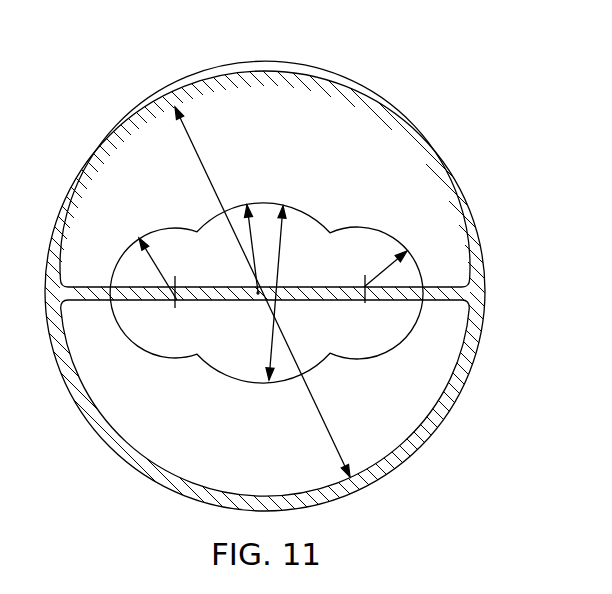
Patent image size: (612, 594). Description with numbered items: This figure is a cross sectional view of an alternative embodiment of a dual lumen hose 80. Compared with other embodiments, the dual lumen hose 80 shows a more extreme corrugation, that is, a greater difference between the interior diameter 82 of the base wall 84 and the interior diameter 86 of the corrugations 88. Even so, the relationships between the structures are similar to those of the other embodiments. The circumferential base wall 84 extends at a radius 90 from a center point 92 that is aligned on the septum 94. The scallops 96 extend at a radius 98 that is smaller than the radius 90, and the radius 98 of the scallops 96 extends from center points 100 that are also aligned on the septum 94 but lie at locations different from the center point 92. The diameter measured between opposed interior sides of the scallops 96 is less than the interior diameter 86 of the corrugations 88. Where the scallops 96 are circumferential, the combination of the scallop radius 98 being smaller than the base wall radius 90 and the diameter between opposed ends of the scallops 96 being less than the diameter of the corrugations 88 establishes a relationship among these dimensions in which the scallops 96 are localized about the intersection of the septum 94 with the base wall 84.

The dual lumen hose 80 is at (288, 270).
The interior diameter of the base wall 82 is at (279, 257).
The base wall 84 is at (299, 209).
The interior diameter of the corrugations 86 is at (322, 421).
The corrugations 88 is at (352, 88).
The radius 90 is at (251, 230).
The center point 92 is at (258, 298).
The septum 94 is at (442, 287).
The scallops 96 is at (131, 247).
The radius of the scallops 98 is at (167, 260).
The center points 100 is at (178, 310).